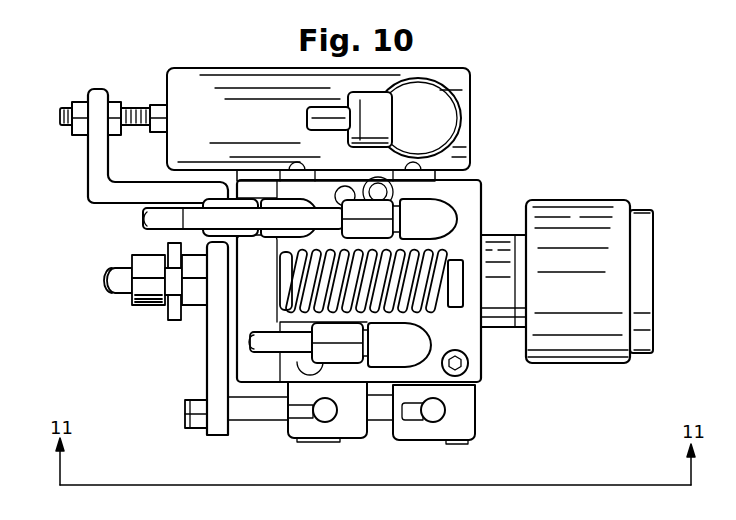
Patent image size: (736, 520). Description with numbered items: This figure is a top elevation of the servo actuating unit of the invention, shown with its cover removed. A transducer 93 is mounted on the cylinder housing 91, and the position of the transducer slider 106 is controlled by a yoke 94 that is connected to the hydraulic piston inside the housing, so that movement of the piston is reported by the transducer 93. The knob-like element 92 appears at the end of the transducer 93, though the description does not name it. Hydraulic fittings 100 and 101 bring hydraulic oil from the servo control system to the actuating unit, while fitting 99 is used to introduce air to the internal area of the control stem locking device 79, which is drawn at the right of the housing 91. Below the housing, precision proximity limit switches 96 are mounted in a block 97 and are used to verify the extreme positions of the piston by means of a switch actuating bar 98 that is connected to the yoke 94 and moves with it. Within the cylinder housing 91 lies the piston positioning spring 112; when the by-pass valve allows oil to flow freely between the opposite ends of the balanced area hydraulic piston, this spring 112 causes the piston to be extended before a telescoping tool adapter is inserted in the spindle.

The control stem locking device 79 is at (585, 202).
The cylinder housing 91 is at (470, 186).
The knob 92 is at (443, 105).
The transducer 93 is at (187, 78).
The yoke 94 is at (95, 165).
The precision proximity limit switches 96 is at (323, 421).
The block 97 is at (475, 432).
The switch actuating bar 98 is at (257, 418).
The fitting 99 is at (415, 357).
The hydraulic fitting 100 is at (448, 217).
The hydraulic fitting 101 is at (273, 198).
The transducer slider 106 is at (62, 112).
The piston positioning spring 112 is at (431, 311).